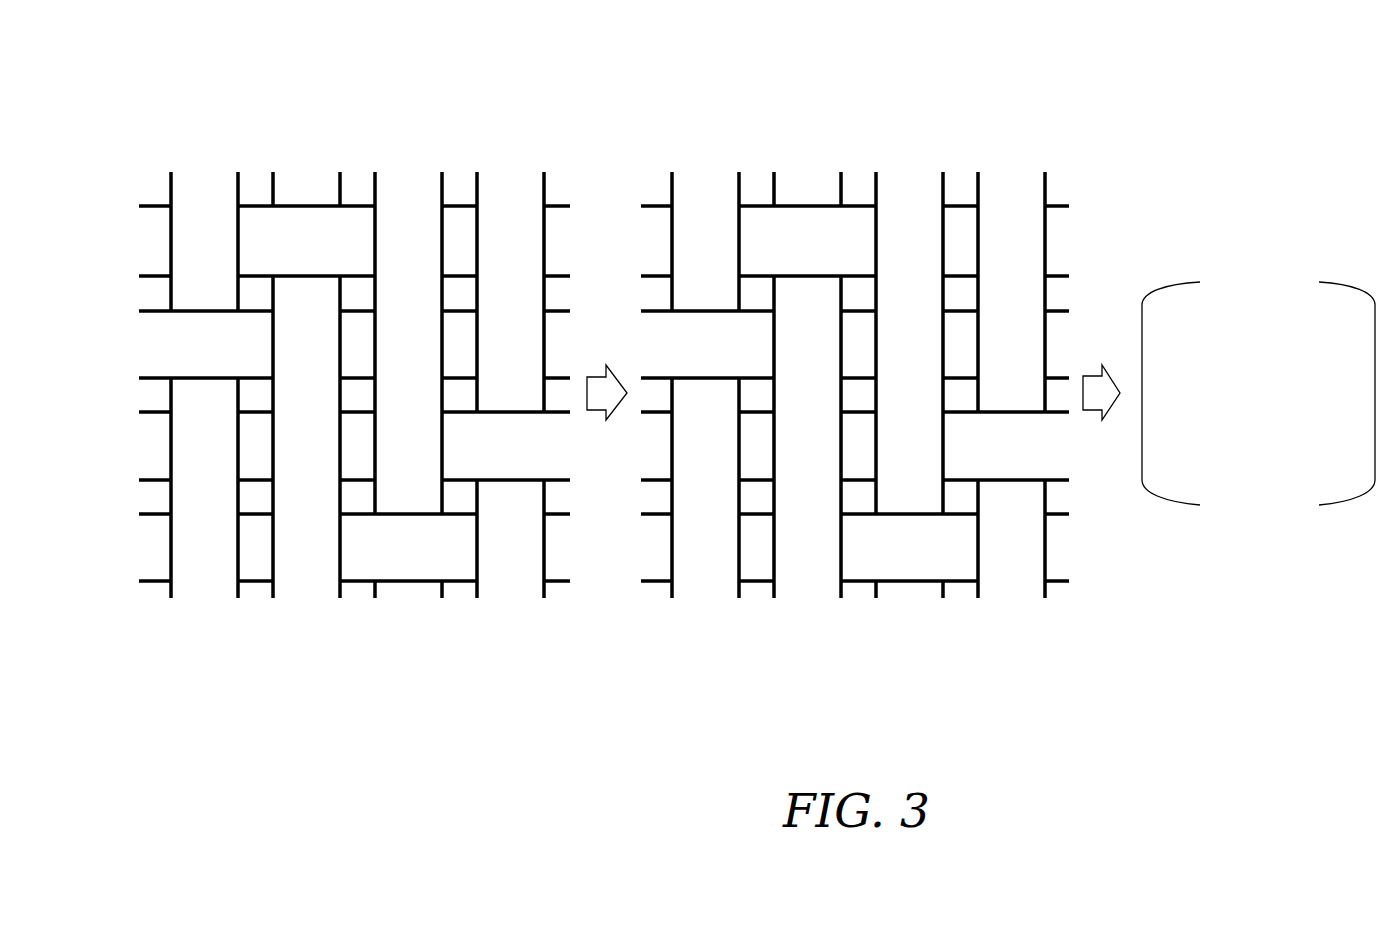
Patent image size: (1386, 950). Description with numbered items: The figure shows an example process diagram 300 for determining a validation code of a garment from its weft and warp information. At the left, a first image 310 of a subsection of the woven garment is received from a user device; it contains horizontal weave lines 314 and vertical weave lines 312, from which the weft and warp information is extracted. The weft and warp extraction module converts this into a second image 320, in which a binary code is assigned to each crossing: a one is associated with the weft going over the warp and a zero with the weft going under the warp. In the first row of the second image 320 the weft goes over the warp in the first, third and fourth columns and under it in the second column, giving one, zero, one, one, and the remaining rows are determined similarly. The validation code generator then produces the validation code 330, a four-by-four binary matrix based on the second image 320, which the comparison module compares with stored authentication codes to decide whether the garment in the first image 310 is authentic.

The process diagram 300 is at (1302, 80).
The first image 310 is at (275, 172).
The vertical weave lines 312 is at (409, 172).
The horizontal weave lines 314 is at (572, 238).
The second image 320 is at (776, 172).
The validation code 330 is at (1190, 283).